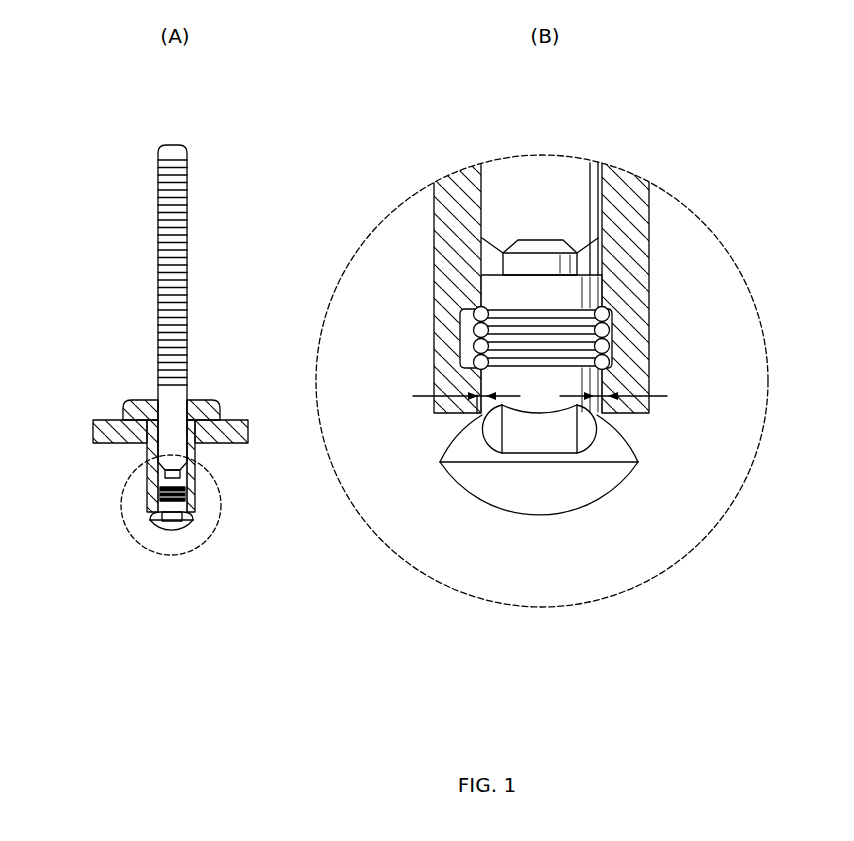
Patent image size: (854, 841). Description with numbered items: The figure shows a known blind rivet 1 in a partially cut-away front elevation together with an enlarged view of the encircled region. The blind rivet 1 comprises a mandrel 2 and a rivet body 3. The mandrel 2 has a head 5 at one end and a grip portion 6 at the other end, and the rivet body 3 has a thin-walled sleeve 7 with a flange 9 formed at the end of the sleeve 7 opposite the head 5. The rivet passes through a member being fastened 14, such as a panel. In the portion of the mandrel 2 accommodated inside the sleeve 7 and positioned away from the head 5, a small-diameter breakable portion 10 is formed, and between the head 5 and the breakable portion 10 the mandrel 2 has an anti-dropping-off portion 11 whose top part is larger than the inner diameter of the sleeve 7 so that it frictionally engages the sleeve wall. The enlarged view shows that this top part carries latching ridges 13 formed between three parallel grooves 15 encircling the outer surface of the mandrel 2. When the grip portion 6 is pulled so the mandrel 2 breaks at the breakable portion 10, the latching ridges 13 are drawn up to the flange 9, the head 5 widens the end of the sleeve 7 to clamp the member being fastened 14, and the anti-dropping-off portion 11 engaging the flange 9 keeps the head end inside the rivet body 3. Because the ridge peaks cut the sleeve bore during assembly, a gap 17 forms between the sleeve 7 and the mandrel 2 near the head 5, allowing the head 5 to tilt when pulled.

The blind rivet 1 is at (192, 244).
The mandrel 2 is at (370, 278).
The rivet body 3 is at (404, 326).
The head 5 is at (169, 529).
The grip portion 6 is at (189, 307).
The sleeve 7 is at (148, 447).
The flange 9 is at (130, 402).
The breakable portion 10 is at (178, 463).
The anti-dropping-off portion 11 is at (188, 494).
The latching ridges 13 is at (574, 347).
The member being fastened 14 is at (110, 437).
The grooves 15 is at (505, 314).
The gap 17 is at (413, 397).